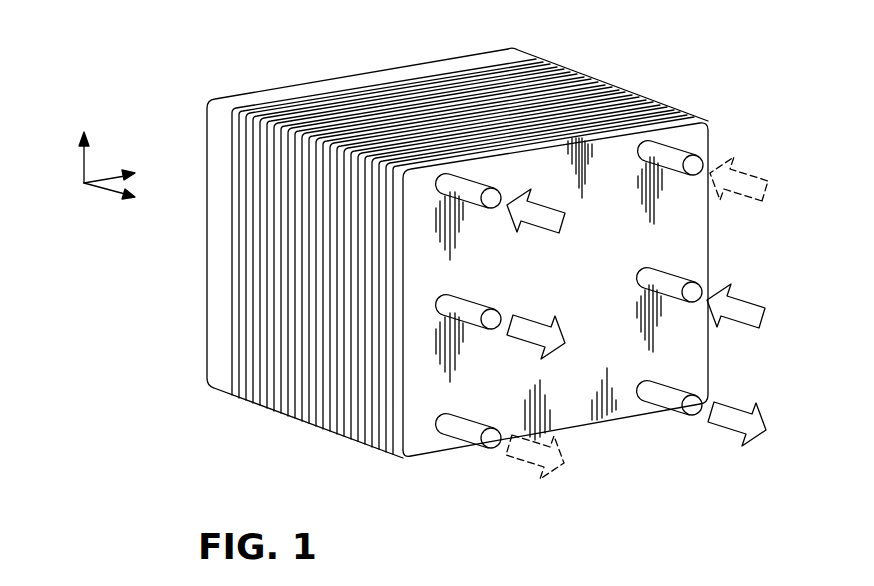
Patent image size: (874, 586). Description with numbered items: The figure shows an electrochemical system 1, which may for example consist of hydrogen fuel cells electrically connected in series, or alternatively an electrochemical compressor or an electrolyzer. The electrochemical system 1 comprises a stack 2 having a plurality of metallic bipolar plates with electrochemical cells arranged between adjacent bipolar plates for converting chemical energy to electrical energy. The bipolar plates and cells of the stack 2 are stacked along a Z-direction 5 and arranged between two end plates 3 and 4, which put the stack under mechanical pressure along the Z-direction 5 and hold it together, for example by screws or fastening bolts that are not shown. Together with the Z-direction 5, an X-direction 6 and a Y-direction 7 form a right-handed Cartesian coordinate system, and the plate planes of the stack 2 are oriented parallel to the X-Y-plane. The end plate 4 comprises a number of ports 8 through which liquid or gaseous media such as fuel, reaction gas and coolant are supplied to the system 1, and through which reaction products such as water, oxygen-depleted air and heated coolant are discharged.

The electrochemical system 1 is at (224, 465).
The stack 2 is at (232, 400).
The end plate 3 is at (251, 94).
The end plate 4 is at (711, 129).
The Z-direction 5 is at (99, 191).
The X-direction 6 is at (104, 178).
The Y-direction 7 is at (83, 165).
The ports 8 is at (470, 210).